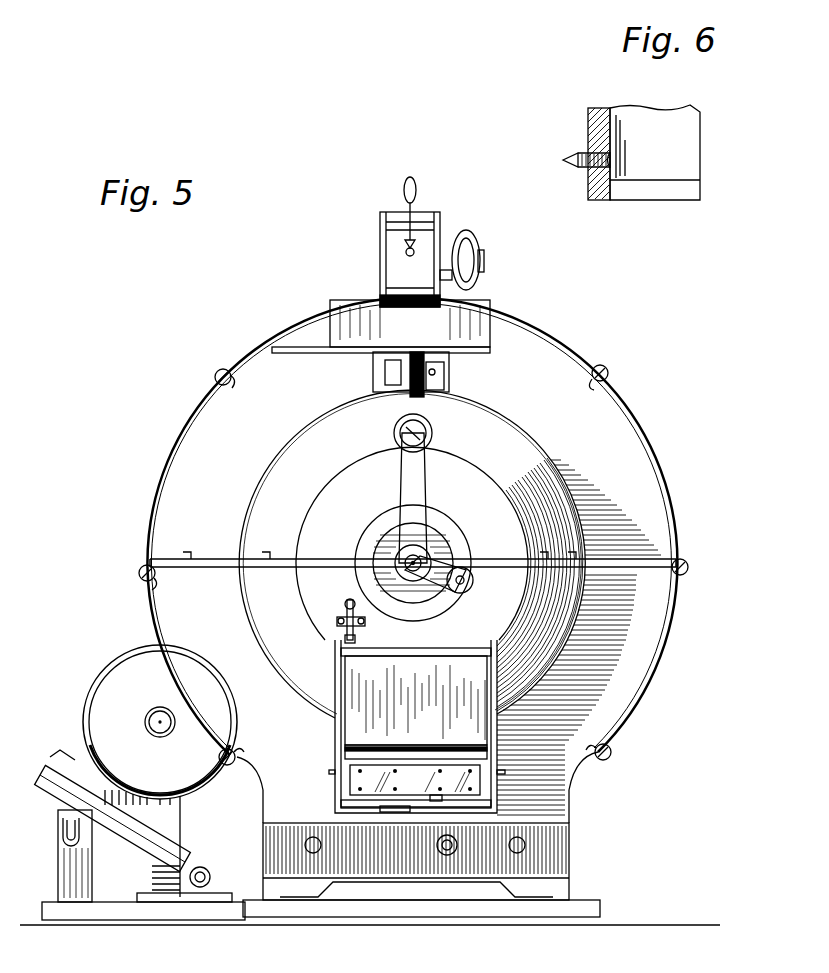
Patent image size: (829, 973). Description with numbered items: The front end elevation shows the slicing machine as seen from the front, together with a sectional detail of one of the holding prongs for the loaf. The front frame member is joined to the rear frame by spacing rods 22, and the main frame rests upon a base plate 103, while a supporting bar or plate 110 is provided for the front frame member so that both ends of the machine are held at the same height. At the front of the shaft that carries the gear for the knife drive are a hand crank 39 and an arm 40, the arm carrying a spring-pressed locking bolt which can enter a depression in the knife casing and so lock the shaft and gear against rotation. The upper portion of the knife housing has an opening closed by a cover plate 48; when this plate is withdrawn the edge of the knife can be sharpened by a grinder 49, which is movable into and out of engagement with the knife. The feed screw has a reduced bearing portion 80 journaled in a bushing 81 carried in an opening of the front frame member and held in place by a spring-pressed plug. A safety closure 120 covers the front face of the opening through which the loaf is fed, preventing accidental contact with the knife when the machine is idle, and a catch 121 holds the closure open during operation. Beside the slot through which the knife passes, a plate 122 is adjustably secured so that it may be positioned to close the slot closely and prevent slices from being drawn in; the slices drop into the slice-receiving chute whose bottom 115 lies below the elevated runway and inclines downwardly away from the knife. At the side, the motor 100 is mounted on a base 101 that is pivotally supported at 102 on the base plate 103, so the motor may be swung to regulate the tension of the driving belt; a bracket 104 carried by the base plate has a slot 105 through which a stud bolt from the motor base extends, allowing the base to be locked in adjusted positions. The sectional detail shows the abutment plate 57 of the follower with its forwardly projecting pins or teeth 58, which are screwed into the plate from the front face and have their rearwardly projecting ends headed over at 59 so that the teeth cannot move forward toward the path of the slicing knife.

In FIG. 5, the spacing rods 22 is at (526, 845).
In FIG. 5, the hand crank 39 is at (422, 487).
In FIG. 5, the arm 40 is at (448, 568).
In FIG. 5, the cover plate 48 is at (470, 310).
In FIG. 5, the grinder 49 is at (425, 230).
In FIG. 6, the abutment plate 57 is at (587, 136).
In FIG. 5, the abutment plate 57 is at (378, 800).
In FIG. 6, the pins or teeth 58 is at (585, 165).
In FIG. 5, the pins or teeth 58 is at (440, 795).
In FIG. 6, the headed-over end 59 is at (616, 160).
In FIG. 5, the reduced bearing portion 80 is at (440, 848).
In FIG. 5, the bushing 81 is at (453, 846).
In FIG. 5, the motor 100 is at (118, 690).
In FIG. 5, the base 101 is at (140, 840).
In FIG. 5, the pivotal support 102 is at (215, 870).
In FIG. 5, the base plate 103 is at (96, 905).
In FIG. 5, the bracket 104 is at (68, 873).
In FIG. 5, the slot 105 is at (63, 833).
In FIG. 5, the supporting bar or plate 110 is at (592, 898).
In FIG. 5, the bottom of the slice-receiving chute 115 is at (386, 812).
In FIG. 5, the safety closure 120 is at (417, 726).
In FIG. 5, the catch 121 is at (345, 603).
In FIG. 5, the plate 122 is at (343, 796).